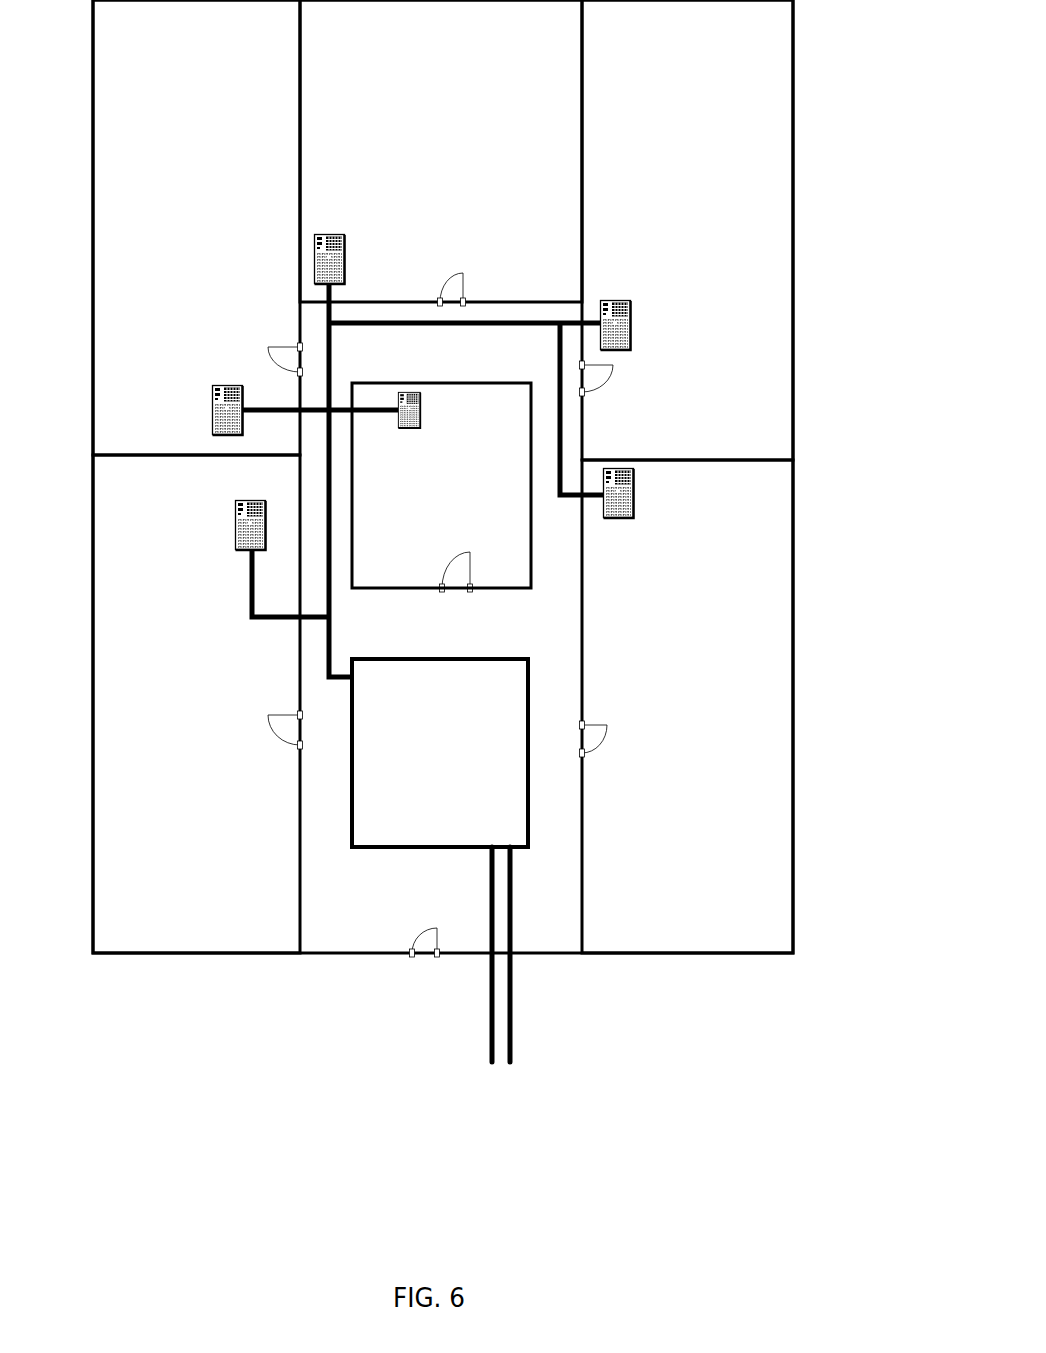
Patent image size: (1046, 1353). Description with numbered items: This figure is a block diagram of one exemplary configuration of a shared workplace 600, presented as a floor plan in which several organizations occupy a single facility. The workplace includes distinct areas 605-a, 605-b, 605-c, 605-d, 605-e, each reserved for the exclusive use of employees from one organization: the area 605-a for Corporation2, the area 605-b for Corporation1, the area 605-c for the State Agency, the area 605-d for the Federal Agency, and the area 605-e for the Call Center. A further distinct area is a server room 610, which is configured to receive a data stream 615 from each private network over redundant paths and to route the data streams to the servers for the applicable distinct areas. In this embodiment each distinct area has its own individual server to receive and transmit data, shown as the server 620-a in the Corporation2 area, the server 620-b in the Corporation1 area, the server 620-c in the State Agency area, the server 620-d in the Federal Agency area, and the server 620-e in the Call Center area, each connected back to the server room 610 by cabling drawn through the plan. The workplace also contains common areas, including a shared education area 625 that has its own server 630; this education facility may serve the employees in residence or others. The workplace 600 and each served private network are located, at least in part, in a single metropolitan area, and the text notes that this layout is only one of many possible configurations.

The shared workplace 600 is at (776, 1262).
The distinct area 605-a is at (148, 955).
The distinct area 605-b is at (93, 268).
The distinct area 605-c is at (533, 230).
The distinct area 605-d is at (793, 300).
The distinct area 605-e is at (717, 953).
The server room 610 is at (420, 810).
The data stream 615 is at (468, 1008).
The server 620-a is at (235, 522).
The server 620-b is at (212, 388).
The server 620-c is at (345, 237).
The server 620-d is at (630, 349).
The server 620-e is at (634, 518).
The shared education area 625 is at (418, 546).
The server 630 is at (420, 398).